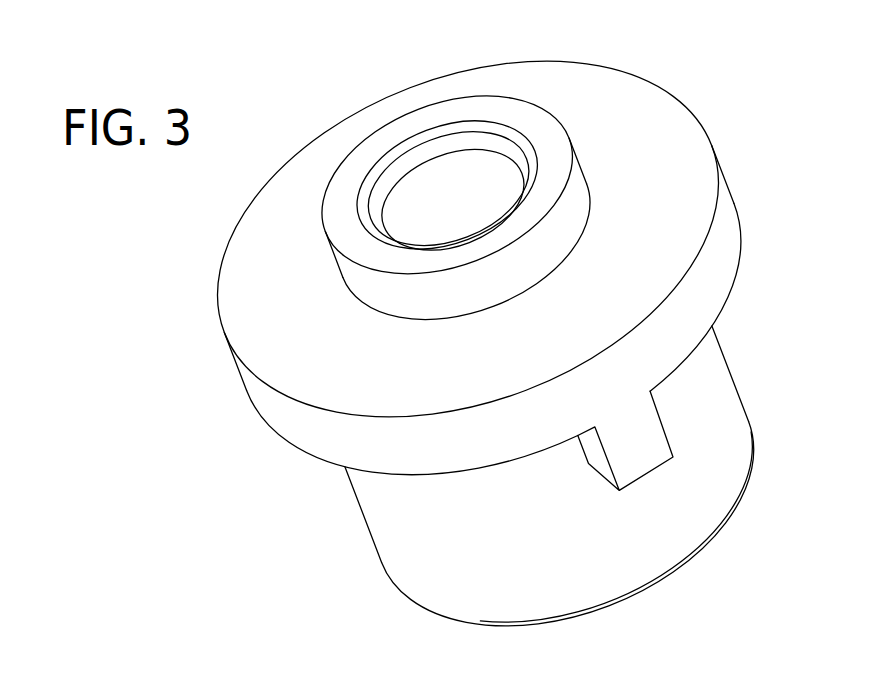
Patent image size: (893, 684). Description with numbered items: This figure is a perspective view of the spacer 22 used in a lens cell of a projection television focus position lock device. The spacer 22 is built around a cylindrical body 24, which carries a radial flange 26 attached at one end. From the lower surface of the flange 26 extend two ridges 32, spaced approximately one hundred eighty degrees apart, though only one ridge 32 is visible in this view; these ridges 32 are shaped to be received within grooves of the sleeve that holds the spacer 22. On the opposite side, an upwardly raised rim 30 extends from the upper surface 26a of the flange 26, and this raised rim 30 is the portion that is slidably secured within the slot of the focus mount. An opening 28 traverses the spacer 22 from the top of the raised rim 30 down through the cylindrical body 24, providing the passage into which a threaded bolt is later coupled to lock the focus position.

The spacer 22 is at (204, 296).
The cylindrical body 24 is at (712, 407).
The radial flange 26 is at (718, 267).
The upper surface 26a is at (617, 128).
The opening 28 is at (438, 203).
The raised rim 30 is at (360, 165).
The ridges 32 is at (640, 465).